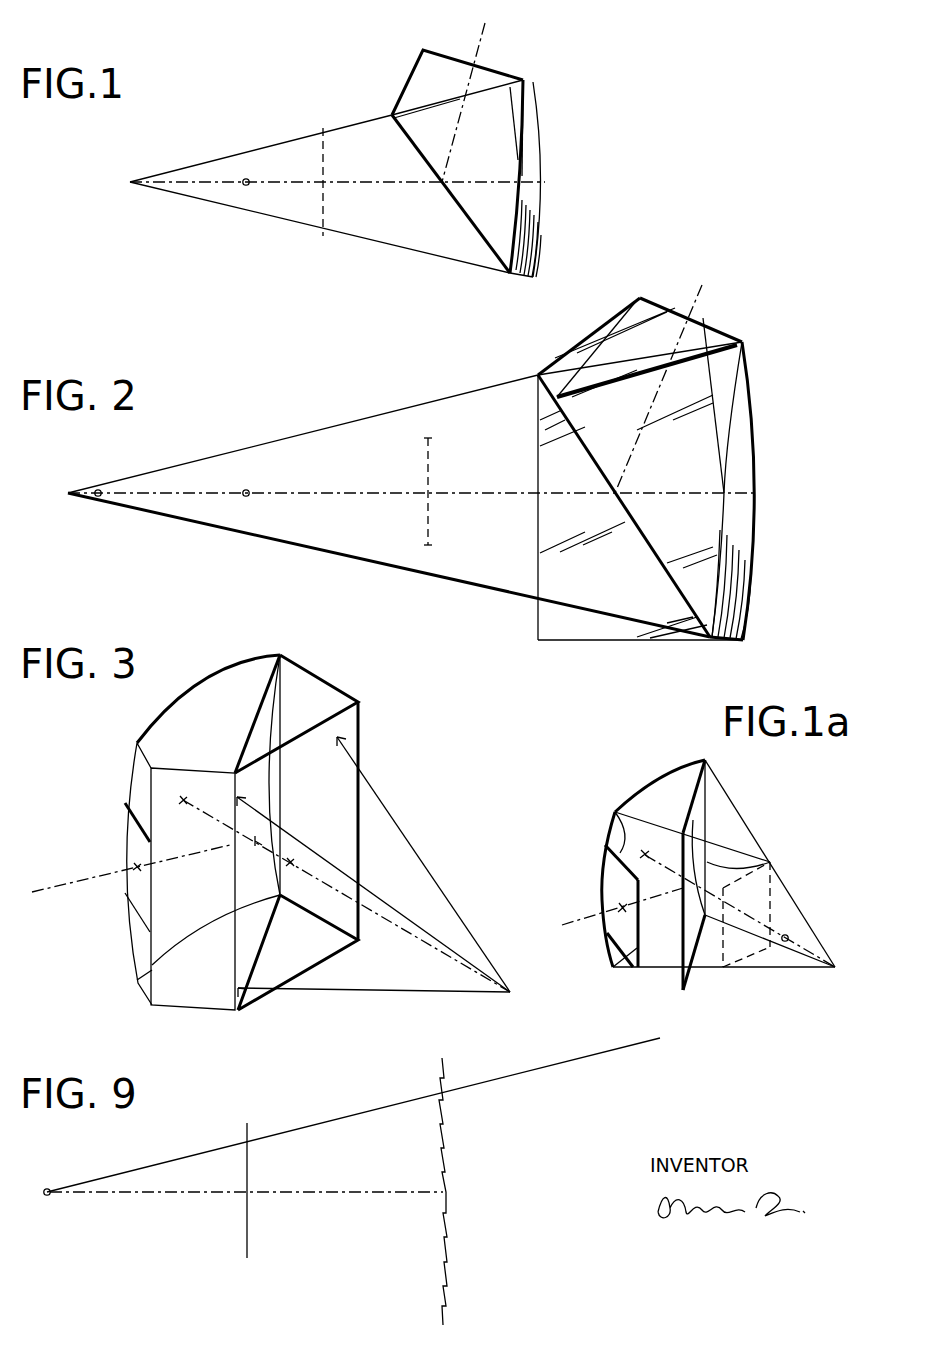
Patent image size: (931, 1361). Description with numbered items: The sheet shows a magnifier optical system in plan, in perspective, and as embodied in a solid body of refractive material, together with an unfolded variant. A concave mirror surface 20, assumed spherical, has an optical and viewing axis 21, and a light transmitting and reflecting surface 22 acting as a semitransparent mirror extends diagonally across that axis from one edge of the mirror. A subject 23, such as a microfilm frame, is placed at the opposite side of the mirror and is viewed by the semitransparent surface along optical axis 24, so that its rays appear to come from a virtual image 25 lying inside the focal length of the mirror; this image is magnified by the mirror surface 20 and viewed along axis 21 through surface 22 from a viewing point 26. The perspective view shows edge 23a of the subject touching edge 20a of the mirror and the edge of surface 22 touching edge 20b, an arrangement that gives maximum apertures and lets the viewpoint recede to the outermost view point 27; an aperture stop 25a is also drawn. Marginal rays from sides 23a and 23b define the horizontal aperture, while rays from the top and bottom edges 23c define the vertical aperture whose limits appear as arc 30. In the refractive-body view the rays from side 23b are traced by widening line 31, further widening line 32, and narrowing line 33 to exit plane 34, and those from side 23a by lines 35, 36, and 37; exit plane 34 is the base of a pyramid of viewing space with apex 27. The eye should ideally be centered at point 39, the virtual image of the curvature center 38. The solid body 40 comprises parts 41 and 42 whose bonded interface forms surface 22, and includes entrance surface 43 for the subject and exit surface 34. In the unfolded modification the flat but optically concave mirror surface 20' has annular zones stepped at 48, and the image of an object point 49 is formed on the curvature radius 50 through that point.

In FIG. 1, the concave mirror surface 20 is at (560, 178).
In FIG. 2, the concave mirror surface 20 is at (765, 491).
In FIG. 3, the concave mirror surface 20 is at (203, 832).
In FIG. 1a, the concave mirror surface 20 is at (660, 771).
In FIG. 1, the optical and viewing axis 21 is at (284, 186).
In FIG. 1a, the optical and viewing axis 21 is at (798, 943).
In FIG. 1, the light transmitting and reflecting surface 22 is at (490, 247).
In FIG. 2, the light transmitting and reflecting surface 22 is at (540, 446).
In FIG. 3, the light transmitting and reflecting surface 22 is at (250, 723).
In FIG. 1a, the light transmitting and reflecting surface 22 is at (727, 880).
In FIG. 1, the subject 23 is at (502, 72).
In FIG. 2, the subject 23 is at (718, 332).
In FIG. 3, the subject 23 is at (135, 838).
In FIG. 1a, the subject 23 is at (612, 925).
In FIG. 9, the subject 23 is at (245, 1220).
In FIG. 1, the optical axis 24 is at (483, 27).
In FIG. 1a, the optical axis 24 is at (600, 910).
In FIG. 1, the virtual image 25 is at (322, 130).
In FIG. 1, the viewing point 26 is at (245, 186).
In FIG. 1a, the viewing point 26 is at (785, 942).
In FIG. 1, the outermost view point 27 is at (129, 186).
In FIG. 2, the outermost view point 27 is at (67, 497).
In FIG. 3, the outermost view point 27 is at (510, 992).
In FIG. 1a, the outermost view point 27 is at (835, 967).
In FIG. 1, the arc 30 is at (513, 107).
In FIG. 2, the widening line 31 is at (612, 322).
In FIG. 2, the further widening line 32 is at (598, 390).
In FIG. 2, the narrowing line 33 is at (595, 360).
In FIG. 2, the exit plane 34 is at (538, 578).
In FIG. 3, the exit plane 34 is at (342, 823).
In FIG. 2, the widening line 35 is at (730, 408).
In FIG. 2, the further widening line 36 is at (728, 628).
In FIG. 2, the narrowing line 37 is at (598, 622).
In FIG. 2, the center of curvature 38 is at (97, 497).
In FIG. 9, the center of curvature 38 is at (46, 1196).
In FIG. 2, the eye center point 39 is at (245, 497).
In FIG. 3, the solid body 40 is at (350, 724).
In FIG. 3, the part 41 is at (332, 697).
In FIG. 3, the part 42 is at (257, 683).
In FIG. 3, the surface 43 is at (138, 795).
In FIG. 1a, the edge 20a is at (613, 823).
In FIG. 1a, the edge 20b is at (702, 820).
In FIG. 1a, the edge 23a is at (603, 892).
In FIG. 1a, the side 23b is at (642, 930).
In FIG. 1a, the top and bottom edges 23c is at (613, 845).
In FIG. 1a, the aperture stop 25a is at (773, 882).
In FIG. 9, the mirror surface 20' is at (415, 1191).
In FIG. 9, the steps 48 is at (445, 1257).
In FIG. 9, the object point 49 is at (245, 1142).
In FIG. 9, the curvature radius 50 is at (502, 1077).